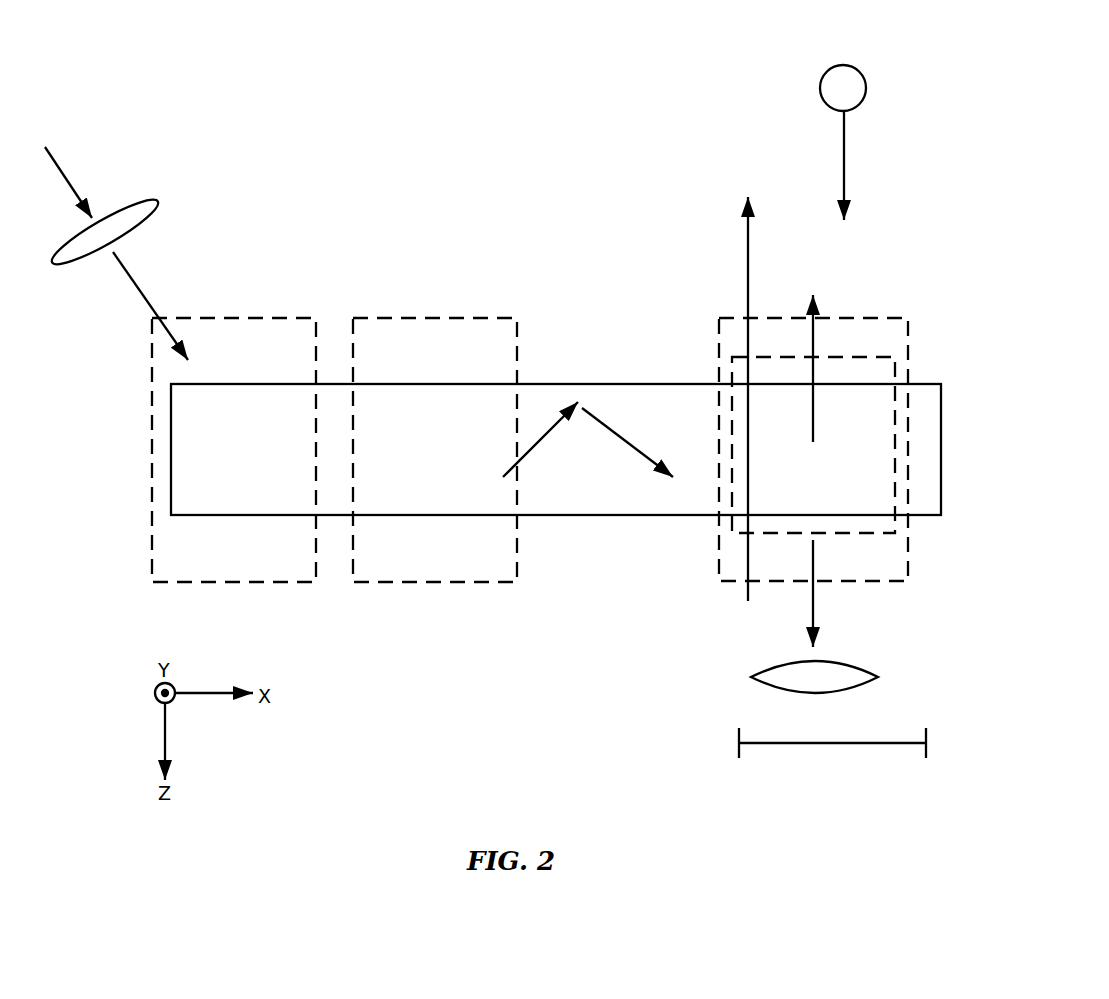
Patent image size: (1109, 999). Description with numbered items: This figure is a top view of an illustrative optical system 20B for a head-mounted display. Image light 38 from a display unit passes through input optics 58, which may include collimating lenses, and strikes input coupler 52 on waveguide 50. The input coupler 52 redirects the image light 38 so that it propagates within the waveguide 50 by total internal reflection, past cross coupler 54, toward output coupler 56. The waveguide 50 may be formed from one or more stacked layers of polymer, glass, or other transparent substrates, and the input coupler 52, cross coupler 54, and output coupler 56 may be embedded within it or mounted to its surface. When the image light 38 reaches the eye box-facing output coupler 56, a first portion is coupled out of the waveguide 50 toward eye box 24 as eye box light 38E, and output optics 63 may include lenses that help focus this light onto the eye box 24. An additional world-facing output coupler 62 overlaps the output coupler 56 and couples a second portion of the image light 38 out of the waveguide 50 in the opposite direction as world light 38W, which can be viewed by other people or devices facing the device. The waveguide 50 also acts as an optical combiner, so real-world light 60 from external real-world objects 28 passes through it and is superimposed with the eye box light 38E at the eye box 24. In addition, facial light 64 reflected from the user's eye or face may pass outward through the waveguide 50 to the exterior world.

The optical system 20B is at (677, 68).
The image light 38 is at (62, 157).
The input optics 58 is at (160, 205).
The input coupler 52 is at (258, 318).
The cross coupler 54 is at (408, 318).
The waveguide 50 is at (617, 384).
The output coupler 56 is at (878, 318).
The output coupler 62 is at (895, 364).
The light 64 is at (747, 247).
The real-world objects 28 is at (867, 90).
The real-world light 60 is at (845, 155).
The world light 38W is at (813, 425).
The eye box light 38E is at (813, 610).
The output optics 63 is at (878, 672).
The eye box 24 is at (793, 745).